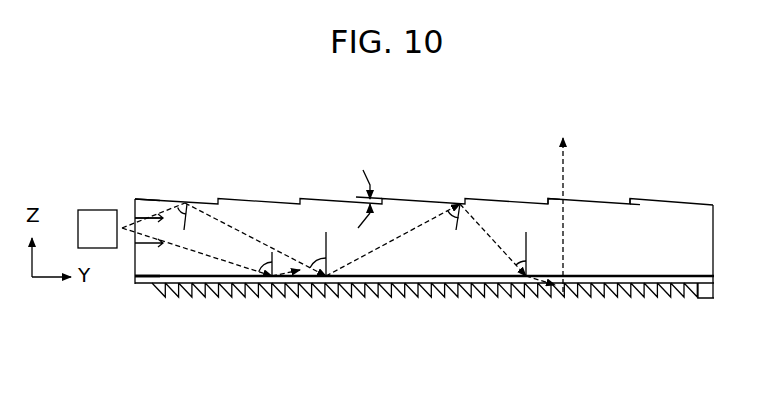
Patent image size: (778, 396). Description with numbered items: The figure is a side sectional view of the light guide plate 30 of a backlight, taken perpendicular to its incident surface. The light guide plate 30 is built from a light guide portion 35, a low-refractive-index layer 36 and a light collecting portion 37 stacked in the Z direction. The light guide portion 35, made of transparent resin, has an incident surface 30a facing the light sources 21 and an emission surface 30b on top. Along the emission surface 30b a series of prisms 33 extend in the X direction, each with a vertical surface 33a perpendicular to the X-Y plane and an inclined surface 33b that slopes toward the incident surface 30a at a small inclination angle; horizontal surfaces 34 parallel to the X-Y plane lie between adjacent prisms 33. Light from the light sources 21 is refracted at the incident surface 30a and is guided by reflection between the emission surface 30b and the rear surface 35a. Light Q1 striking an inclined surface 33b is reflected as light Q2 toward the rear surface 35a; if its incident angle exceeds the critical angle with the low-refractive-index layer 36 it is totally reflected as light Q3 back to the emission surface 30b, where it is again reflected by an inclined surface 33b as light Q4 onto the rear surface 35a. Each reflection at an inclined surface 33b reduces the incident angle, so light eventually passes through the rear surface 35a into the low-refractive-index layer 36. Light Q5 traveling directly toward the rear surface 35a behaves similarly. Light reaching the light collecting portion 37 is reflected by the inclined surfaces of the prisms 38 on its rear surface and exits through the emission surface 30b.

The light source 21 is at (89, 210).
The light guide plate 30 is at (416, 215).
The incident surface 30a is at (135, 270).
The emission surface 30b is at (143, 199).
The prism 33 is at (628, 193).
The vertical surface 33a is at (634, 204).
The inclined surface 33b is at (605, 202).
The horizontal surface 34 is at (553, 199).
The light guide portion 35 is at (707, 253).
The rear surface 35a is at (418, 275).
The low-refractive-index layer 36 is at (707, 281).
The light collecting portion 37 is at (713, 300).
The prism 38 is at (610, 297).
The light incident on inclined surfaces Q1 is at (185, 203).
The light reflected by inclined surfaces Q2 is at (255, 239).
The light reflected by rear surface Q3 is at (393, 240).
The light reflected by inclined surfaces Q4 is at (511, 215).
The light traveling toward rear surface Q5 is at (220, 262).